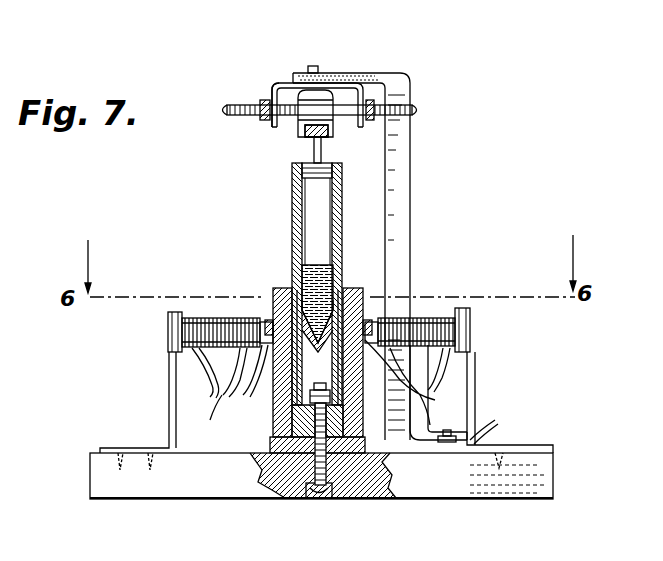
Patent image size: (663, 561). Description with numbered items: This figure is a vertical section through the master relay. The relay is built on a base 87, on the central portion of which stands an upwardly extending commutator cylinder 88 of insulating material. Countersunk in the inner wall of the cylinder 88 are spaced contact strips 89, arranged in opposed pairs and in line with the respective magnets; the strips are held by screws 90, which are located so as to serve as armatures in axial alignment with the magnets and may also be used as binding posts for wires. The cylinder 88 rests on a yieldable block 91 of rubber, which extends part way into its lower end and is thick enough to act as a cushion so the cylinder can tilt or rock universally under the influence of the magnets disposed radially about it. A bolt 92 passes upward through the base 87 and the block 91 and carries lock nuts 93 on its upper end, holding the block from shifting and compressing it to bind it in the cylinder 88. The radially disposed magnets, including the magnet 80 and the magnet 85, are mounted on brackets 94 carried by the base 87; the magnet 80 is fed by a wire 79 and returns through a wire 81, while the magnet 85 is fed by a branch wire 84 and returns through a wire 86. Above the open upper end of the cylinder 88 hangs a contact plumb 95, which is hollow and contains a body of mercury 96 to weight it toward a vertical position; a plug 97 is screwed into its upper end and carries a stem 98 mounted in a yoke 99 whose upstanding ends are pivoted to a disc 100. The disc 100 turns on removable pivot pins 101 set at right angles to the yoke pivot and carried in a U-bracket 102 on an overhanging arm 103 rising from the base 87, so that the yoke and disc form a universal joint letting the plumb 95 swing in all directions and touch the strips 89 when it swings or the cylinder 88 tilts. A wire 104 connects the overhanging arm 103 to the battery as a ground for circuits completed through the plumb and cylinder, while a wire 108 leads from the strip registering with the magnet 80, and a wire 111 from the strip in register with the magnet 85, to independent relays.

The wire 79 is at (445, 370).
The magnet 80 is at (440, 318).
The wire 81 is at (430, 388).
The wire 84 is at (222, 395).
The magnet 85 is at (205, 318).
The wire 86 is at (210, 387).
The base 87 is at (553, 472).
The commutator cylinder 88 is at (364, 330).
The contact strips 89 is at (357, 298).
The screws 90 is at (273, 312).
The yieldable block 91 is at (272, 445).
The bolt 92 is at (319, 500).
The lock nuts 93 is at (318, 383).
The brackets 94 is at (168, 378).
The contact plumb 95 is at (292, 222).
The mercury 96 is at (312, 262).
The plug 97 is at (302, 160).
The stem 98 is at (314, 140).
The yoke 99 is at (298, 120).
The disc 100 is at (340, 110).
The pivot pins 101 is at (275, 83).
The U-bracket 102 is at (270, 90).
The overhanging arm 103 is at (395, 73).
The wire 104 is at (492, 430).
The wire 108 is at (448, 447).
The wire 111 is at (257, 421).